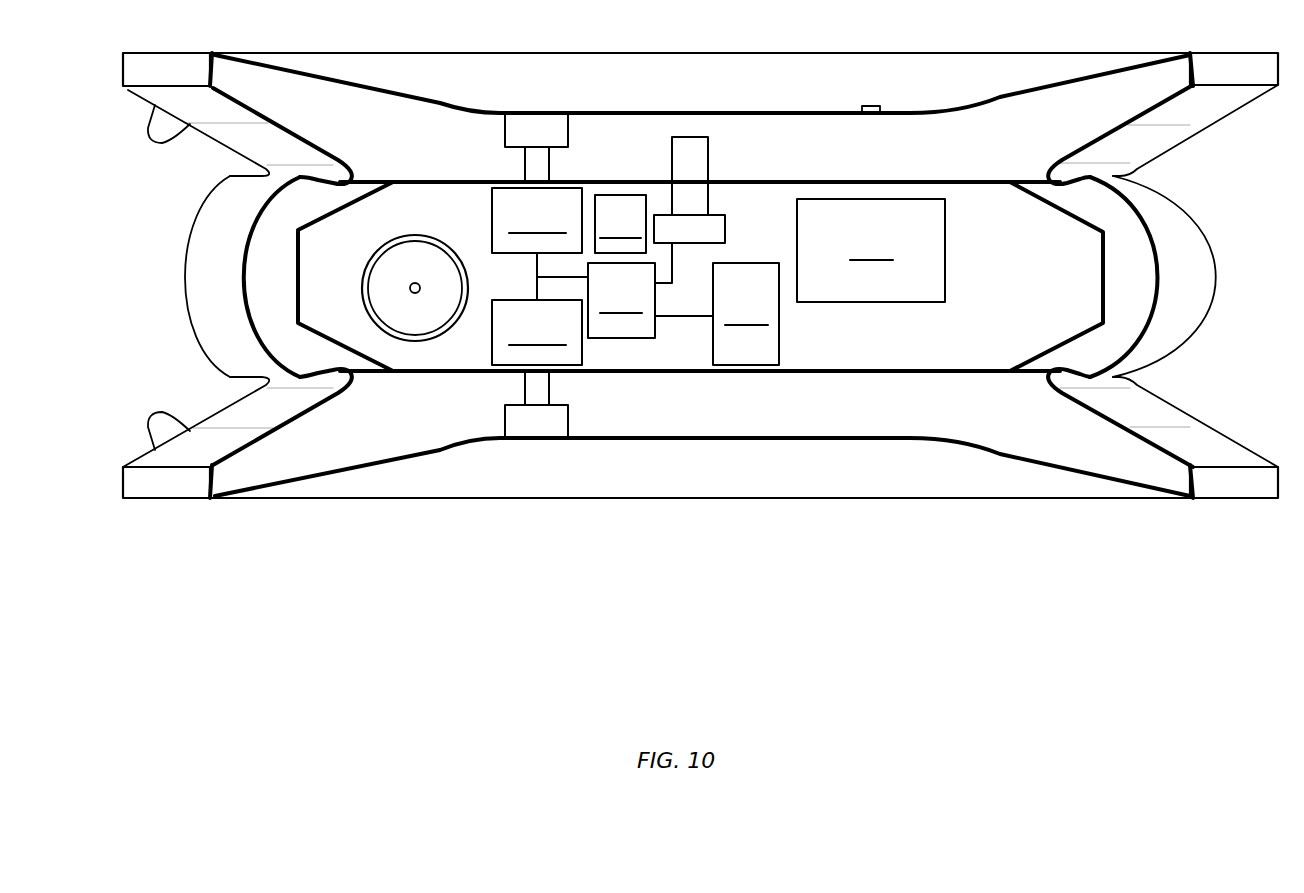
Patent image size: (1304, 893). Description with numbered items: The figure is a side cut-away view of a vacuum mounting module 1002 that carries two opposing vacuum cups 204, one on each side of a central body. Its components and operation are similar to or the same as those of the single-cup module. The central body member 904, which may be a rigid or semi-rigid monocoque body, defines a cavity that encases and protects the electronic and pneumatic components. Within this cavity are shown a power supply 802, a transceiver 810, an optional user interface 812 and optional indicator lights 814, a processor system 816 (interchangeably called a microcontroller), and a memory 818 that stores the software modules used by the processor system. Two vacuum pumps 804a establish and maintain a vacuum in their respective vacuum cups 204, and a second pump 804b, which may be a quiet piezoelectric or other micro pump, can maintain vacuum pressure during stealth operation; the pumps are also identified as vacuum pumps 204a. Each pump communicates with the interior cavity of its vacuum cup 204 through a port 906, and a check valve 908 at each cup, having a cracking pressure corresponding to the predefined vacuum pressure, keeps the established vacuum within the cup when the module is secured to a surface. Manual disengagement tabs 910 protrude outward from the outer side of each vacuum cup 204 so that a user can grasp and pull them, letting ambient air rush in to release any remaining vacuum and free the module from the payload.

The vacuum cup 204 is at (1190, 125).
The vacuum pump 204a is at (487, 178).
The power supply 802 is at (871, 250).
The vacuum pump 804a is at (513, 258).
The second pump 804b is at (418, 323).
The transceiver 810 is at (620, 224).
The user interface 812 is at (745, 190).
The indicator lights 814 is at (689, 229).
The processor system 816 is at (650, 290).
The memory 818 is at (746, 314).
The body member 904 is at (197, 270).
The port 906 is at (550, 165).
The check valve 908 is at (538, 120).
The manual disengagement tab 910 is at (158, 145).
The vacuum mounting module 1002 is at (1180, 204).